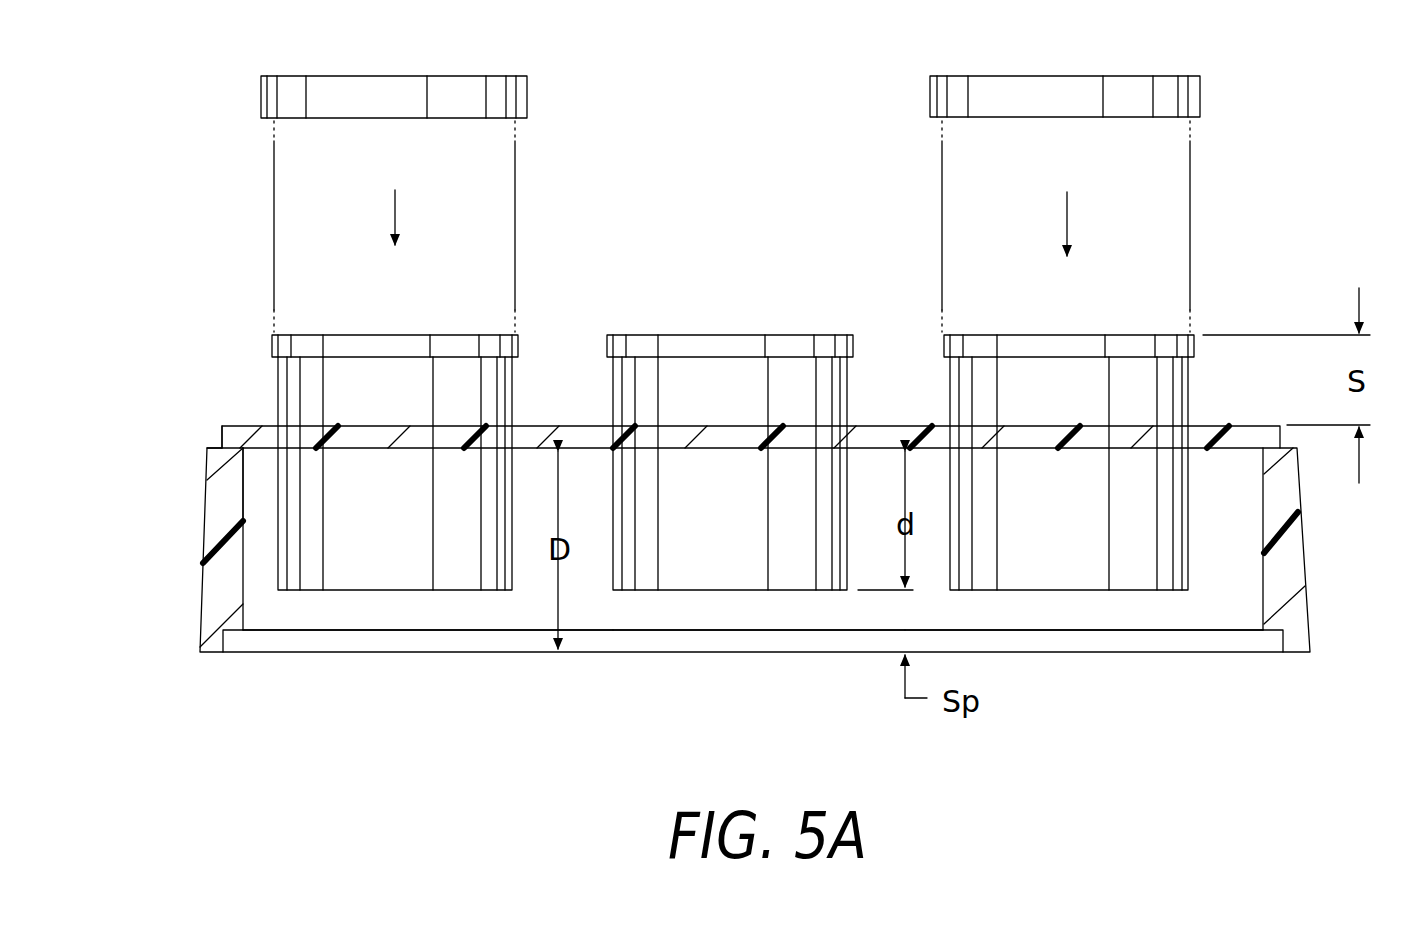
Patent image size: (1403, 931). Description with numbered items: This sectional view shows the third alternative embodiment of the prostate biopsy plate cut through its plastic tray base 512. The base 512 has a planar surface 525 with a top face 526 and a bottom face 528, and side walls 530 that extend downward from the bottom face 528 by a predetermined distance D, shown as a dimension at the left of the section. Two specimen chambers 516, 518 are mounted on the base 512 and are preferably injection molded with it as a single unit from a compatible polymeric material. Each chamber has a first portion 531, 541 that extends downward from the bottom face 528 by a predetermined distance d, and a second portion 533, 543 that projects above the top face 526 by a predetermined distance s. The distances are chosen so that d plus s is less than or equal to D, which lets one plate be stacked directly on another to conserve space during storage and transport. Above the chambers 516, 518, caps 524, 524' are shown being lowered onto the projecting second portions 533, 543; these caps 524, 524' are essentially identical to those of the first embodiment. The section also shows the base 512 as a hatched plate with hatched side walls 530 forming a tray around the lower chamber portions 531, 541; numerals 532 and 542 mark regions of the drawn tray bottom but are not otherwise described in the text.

The base 512 is at (1262, 420).
The specimen chamber 516 is at (470, 305).
The specimen chamber 518 is at (1208, 295).
The cap 524 is at (449, 66).
The cap 524' is at (1126, 86).
The planar surface 525 is at (222, 447).
The top face 526 is at (247, 427).
The bottom face 528 is at (318, 452).
The side wall 530 is at (207, 583).
The first portion of chamber 531 is at (610, 538).
The tray bottom second region 532 is at (742, 593).
The second portion of chamber 533 is at (272, 358).
The first portion of chamber 541 is at (1190, 547).
The tray bottom 542 is at (1090, 590).
The second portion of chamber 543 is at (943, 364).